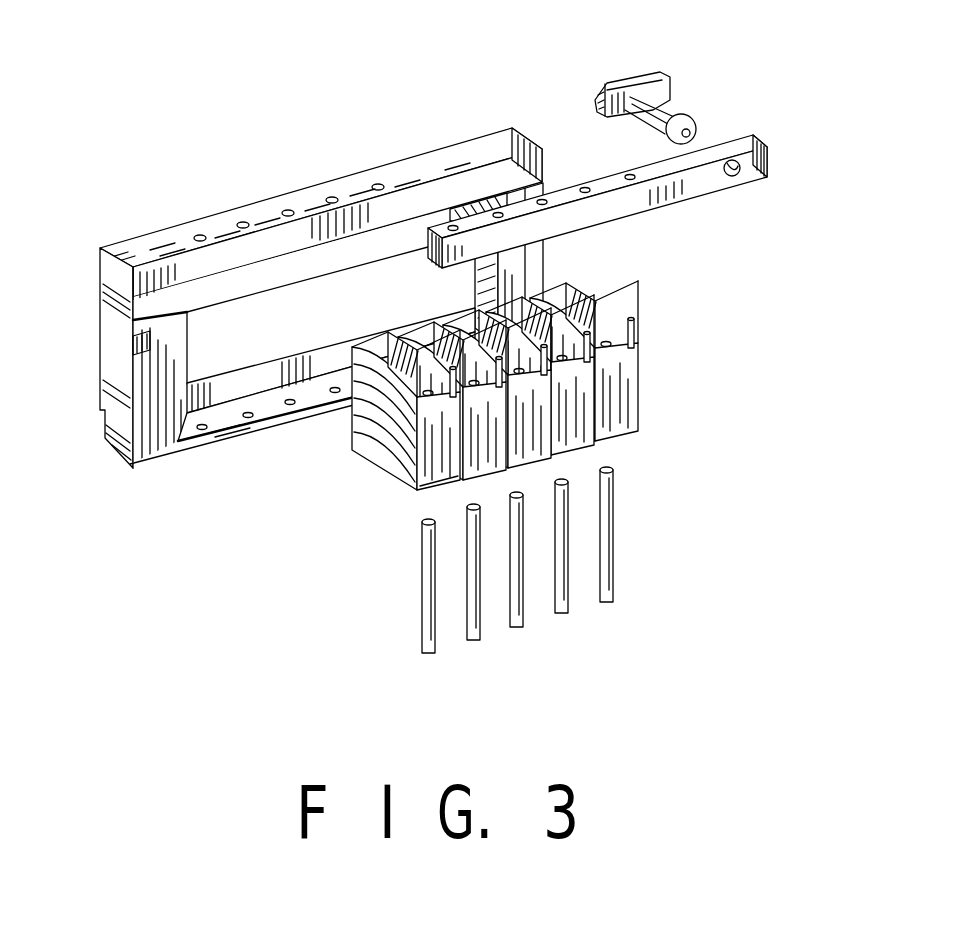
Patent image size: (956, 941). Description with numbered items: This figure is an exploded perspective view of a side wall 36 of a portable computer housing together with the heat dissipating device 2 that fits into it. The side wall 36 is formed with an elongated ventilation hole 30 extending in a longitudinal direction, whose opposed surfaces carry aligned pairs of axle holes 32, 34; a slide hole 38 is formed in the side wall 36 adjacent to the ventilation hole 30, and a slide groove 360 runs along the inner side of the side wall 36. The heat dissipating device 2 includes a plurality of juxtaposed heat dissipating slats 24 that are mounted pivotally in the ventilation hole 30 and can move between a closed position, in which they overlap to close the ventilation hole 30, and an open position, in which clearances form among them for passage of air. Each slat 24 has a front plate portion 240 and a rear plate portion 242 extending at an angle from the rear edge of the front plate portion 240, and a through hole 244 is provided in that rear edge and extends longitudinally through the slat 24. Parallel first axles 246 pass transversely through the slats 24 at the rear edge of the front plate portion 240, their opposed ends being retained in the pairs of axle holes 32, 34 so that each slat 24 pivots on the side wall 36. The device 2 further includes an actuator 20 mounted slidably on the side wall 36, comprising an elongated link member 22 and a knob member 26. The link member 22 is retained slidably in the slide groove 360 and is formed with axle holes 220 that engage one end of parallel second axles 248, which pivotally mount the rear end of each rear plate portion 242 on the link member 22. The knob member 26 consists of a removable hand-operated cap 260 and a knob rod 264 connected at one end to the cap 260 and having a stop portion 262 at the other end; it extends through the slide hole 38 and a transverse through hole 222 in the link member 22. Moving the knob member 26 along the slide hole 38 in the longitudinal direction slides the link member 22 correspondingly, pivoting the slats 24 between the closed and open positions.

The heat dissipating device 2 is at (469, 355).
The actuator 20 is at (569, 329).
The link member 22 is at (613, 204).
The axle holes 220 is at (606, 193).
The transverse through hole 222 is at (752, 176).
The heat dissipating slats 24 is at (486, 467).
The front plate portion 240 is at (387, 462).
The rear plate portion 242 is at (430, 502).
The through hole 244 is at (614, 350).
The first axles 246 is at (422, 614).
The second axles 248 is at (634, 328).
The knob member 26 is at (697, 80).
The hand-operated cap 260 is at (664, 73).
The stop portion 262 is at (700, 118).
The knob rod 264 is at (645, 122).
The ventilation hole 30 is at (296, 292).
The axle holes 32 is at (198, 236).
The axle holes 34 is at (283, 403).
The side wall 36 is at (118, 320).
The slide groove 360 is at (128, 350).
The slide hole 38 is at (450, 216).